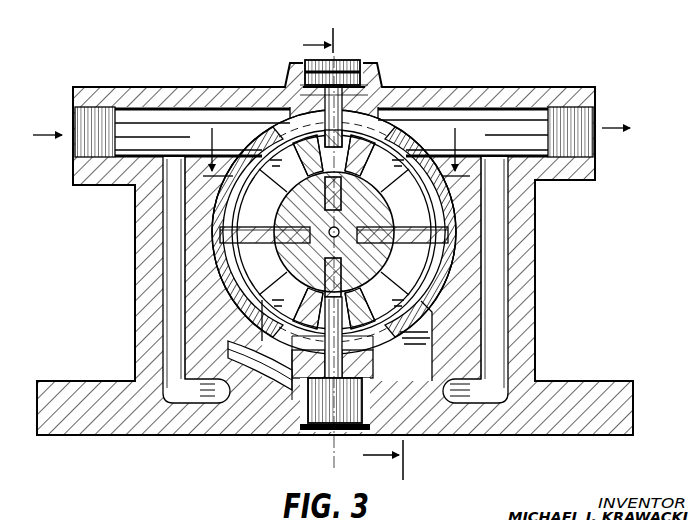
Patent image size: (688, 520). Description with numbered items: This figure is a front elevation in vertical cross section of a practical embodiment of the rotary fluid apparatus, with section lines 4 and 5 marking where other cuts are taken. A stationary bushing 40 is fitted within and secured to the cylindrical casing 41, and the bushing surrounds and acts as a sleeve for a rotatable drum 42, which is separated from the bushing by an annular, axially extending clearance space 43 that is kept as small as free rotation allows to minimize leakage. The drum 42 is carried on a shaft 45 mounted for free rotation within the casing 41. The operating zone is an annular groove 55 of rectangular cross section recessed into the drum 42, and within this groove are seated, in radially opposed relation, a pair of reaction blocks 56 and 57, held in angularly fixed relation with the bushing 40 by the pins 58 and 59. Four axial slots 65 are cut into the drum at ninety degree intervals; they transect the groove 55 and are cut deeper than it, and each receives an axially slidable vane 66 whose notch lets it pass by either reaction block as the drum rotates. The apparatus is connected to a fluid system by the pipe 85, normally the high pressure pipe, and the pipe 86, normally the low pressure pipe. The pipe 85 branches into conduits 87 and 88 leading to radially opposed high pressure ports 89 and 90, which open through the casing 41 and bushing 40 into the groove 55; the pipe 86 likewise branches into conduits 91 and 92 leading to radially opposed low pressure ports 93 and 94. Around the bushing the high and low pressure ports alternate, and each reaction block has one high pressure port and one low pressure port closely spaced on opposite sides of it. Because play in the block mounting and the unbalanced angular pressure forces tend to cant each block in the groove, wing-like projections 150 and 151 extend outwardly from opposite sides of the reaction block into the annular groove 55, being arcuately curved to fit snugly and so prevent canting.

The stationary bushing 40 is at (435, 238).
The cylindrical casing 41 is at (445, 262).
The rotatable drum 42 is at (233, 290).
The annular clearance space 43 is at (435, 210).
The shaft 45 is at (328, 231).
The annular groove 55 is at (433, 290).
The reaction block 56 is at (304, 172).
The reaction block 57 is at (418, 378).
The pin 58 is at (347, 70).
The pin 59 is at (332, 398).
The axial slot 65 is at (357, 222).
The vane 66 is at (410, 228).
The high pressure pipe 85 is at (593, 117).
The low pressure pipe 86 is at (95, 133).
The conduit 87 is at (471, 107).
The conduit 88 is at (508, 285).
The high pressure port 89 is at (393, 134).
The high pressure port 90 is at (273, 360).
The conduit 91 is at (210, 107).
The conduit 92 is at (163, 298).
The low pressure port 93 is at (270, 142).
The low pressure port 94 is at (400, 346).
The wing-like projection 150 is at (287, 160).
The wing-like projection 151 is at (412, 147).
The section line 4- 4 is at (352, 252).
The section line 5- 5 is at (332, 151).